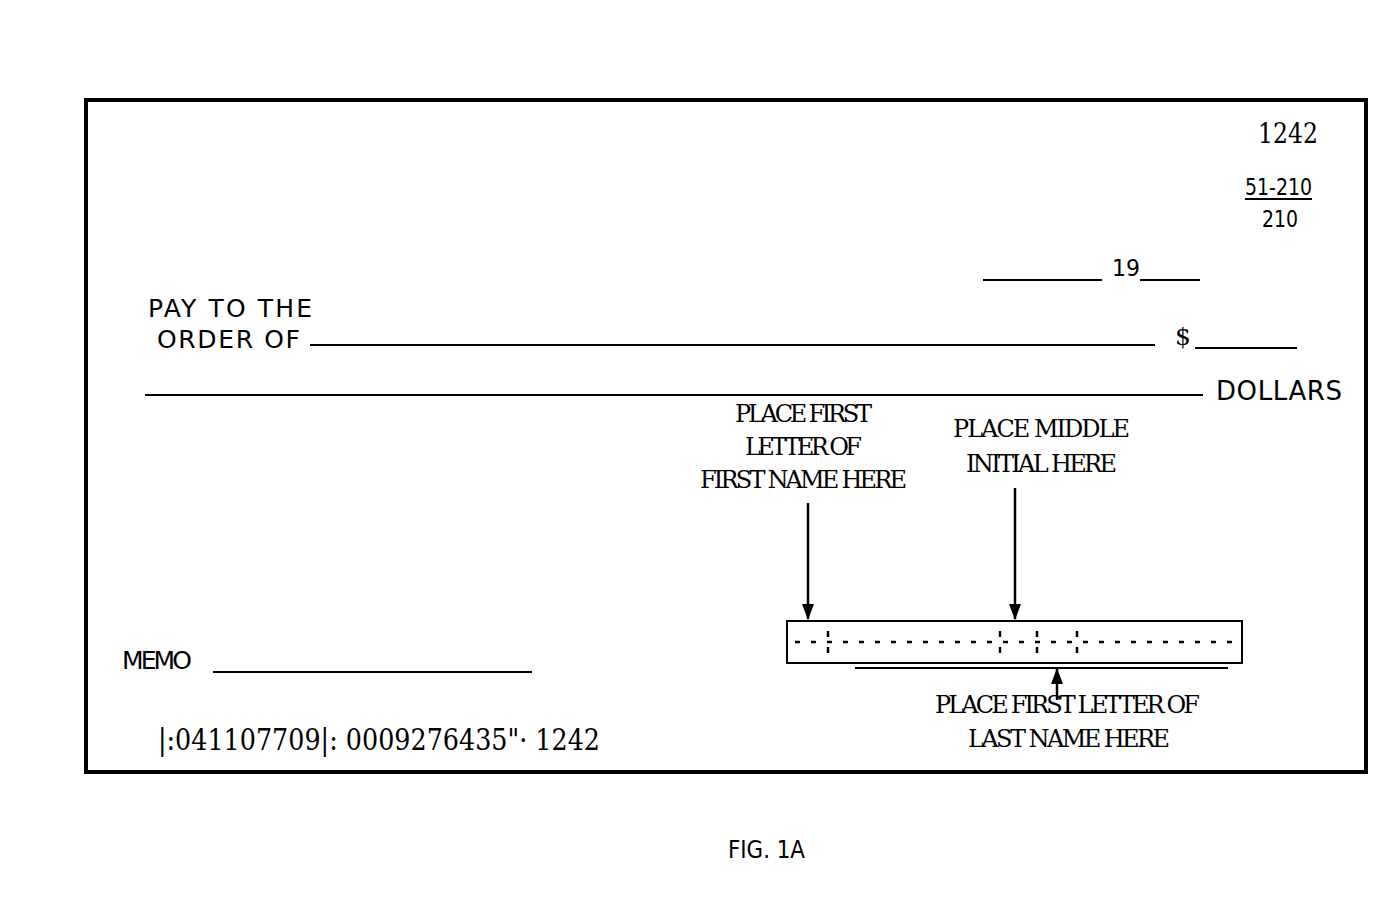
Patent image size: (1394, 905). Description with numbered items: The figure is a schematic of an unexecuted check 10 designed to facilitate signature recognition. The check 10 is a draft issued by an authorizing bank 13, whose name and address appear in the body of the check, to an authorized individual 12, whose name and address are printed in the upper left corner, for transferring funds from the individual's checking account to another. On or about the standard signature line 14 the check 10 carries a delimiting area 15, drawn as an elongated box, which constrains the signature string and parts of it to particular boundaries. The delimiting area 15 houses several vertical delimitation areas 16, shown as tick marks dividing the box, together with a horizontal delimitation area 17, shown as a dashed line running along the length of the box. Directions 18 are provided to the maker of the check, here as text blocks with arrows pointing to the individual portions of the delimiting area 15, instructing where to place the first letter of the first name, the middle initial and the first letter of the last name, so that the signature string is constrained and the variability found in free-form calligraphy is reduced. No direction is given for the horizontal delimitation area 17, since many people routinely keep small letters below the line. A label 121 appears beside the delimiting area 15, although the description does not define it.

The unexecuted check 10 is at (727, 94).
The authorized individual 12 is at (384, 191).
The authorizing bank 13 is at (470, 548).
The standard signature line 14 is at (1222, 669).
The delimiting area 15 is at (1166, 619).
The vertical delimitation areas 16 is at (829, 619).
The horizontal delimitation area 17 is at (1248, 641).
The directions 18 is at (976, 492).
The initial entry field 121 is at (726, 612).